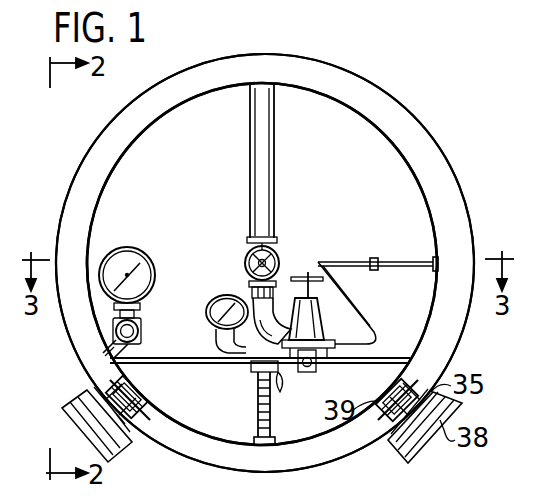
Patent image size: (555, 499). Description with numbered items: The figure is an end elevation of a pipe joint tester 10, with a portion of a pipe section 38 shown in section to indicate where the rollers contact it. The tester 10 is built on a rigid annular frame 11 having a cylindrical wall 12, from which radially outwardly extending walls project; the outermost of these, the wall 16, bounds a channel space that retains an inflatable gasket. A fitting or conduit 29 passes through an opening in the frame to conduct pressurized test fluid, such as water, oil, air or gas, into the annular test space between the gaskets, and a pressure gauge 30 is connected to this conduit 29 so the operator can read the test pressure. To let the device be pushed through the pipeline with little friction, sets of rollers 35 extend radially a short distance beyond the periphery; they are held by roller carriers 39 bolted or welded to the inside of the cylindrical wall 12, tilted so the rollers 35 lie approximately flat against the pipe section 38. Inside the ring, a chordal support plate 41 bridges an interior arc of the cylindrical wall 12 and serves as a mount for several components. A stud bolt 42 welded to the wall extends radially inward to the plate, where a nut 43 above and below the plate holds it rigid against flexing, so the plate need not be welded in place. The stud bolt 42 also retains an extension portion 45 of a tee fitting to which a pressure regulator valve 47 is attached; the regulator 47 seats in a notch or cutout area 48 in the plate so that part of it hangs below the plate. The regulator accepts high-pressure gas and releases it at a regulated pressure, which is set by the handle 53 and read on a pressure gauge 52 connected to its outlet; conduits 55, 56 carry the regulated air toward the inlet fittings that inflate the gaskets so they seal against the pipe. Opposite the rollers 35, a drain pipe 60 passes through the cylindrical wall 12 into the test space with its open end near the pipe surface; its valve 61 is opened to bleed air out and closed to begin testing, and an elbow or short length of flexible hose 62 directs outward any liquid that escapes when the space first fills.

The tester 10 is at (426, 104).
The rigid annular frame 11 is at (80, 172).
The cylindrical wall 12 is at (99, 170).
The radially outwardly extending wall 16 is at (462, 237).
The fitting or conduit 29 is at (126, 350).
The pressure gauge 30 is at (125, 250).
The rollers 35 is at (152, 424).
The pipe section 38 is at (120, 446).
The roller carriers 39 is at (141, 392).
The chordal support plate 41 is at (197, 364).
The stud bolt 42 is at (258, 419).
The nut 43 is at (281, 374).
The extension portion 45 is at (248, 404).
The pressure regulator valve 47 is at (319, 321).
The notch or cutout area 48 is at (315, 366).
The pressure gauge 52 is at (207, 312).
The handle 53 is at (303, 279).
The conduit 55 is at (322, 264).
The conduit 56 is at (432, 261).
The drain pipe 60 is at (274, 175).
The valve 61 is at (247, 256).
The elbow or short length of flexible hose 62 is at (253, 300).